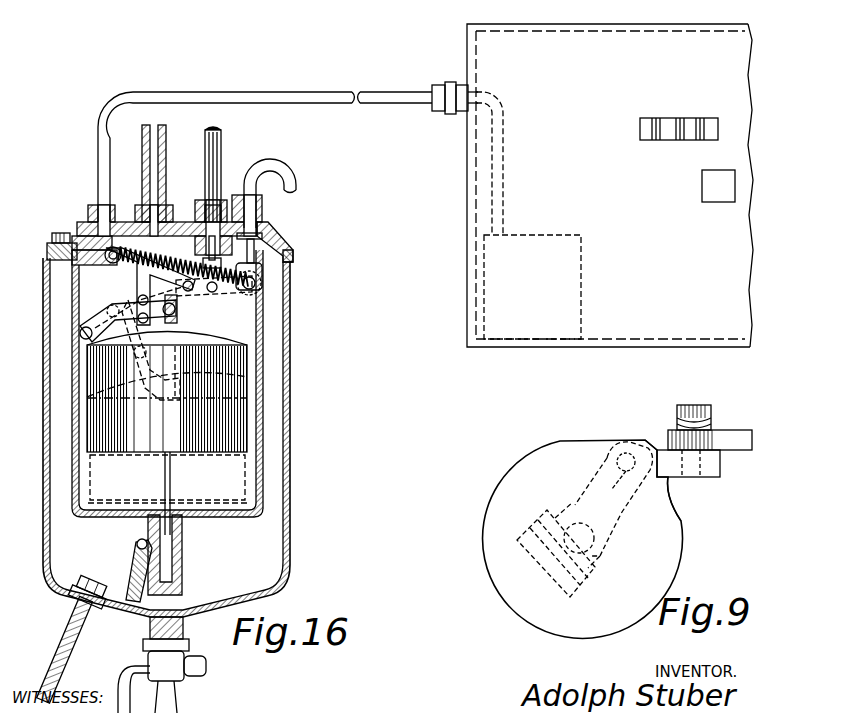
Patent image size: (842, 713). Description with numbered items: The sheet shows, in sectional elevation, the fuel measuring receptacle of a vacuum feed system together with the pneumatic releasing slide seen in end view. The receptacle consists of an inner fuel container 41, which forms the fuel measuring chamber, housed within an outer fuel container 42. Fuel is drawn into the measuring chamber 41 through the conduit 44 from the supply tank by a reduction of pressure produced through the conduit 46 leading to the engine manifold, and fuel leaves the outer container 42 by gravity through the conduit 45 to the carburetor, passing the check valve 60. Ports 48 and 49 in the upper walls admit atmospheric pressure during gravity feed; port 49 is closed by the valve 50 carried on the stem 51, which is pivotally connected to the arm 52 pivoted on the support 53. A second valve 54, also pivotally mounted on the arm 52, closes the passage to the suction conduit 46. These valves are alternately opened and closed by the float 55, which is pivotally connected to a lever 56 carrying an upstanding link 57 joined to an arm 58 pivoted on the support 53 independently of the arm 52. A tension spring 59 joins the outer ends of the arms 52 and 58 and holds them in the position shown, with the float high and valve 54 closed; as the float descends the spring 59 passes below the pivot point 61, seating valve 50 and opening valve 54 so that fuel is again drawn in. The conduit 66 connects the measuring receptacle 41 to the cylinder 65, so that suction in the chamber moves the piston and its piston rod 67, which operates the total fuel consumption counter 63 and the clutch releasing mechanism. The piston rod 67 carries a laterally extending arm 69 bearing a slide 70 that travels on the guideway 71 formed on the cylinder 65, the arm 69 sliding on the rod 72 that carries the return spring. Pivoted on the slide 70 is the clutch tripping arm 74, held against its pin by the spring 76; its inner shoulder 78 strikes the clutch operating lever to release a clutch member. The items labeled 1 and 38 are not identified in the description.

In FIG. 16, the casing 1 is at (610, 185).
In FIG. 16, the indicator window 38 is at (716, 202).
In FIG. 16, the inner fuel container 41 is at (226, 517).
In FIG. 16, the outer fuel container 42 is at (290, 374).
In FIG. 16, the conduit 44 is at (155, 172).
In FIG. 16, the conduit 45 is at (72, 638).
In FIG. 16, the conduit 46 is at (210, 155).
In FIG. 16, the port 48 is at (272, 248).
In FIG. 16, the port 49 is at (290, 254).
In FIG. 16, the valve 50 is at (250, 230).
In FIG. 16, the stem 51 is at (262, 274).
In FIG. 16, the arm 52 is at (228, 292).
In FIG. 16, the support 53 is at (135, 238).
In FIG. 16, the valve 54 is at (200, 240).
In FIG. 16, the float 55 is at (167, 434).
In FIG. 16, the lever 56 is at (170, 320).
In FIG. 16, the upstanding link 57 is at (172, 288).
In FIG. 16, the arm 58 is at (180, 262).
In FIG. 16, the tension spring 59 is at (180, 255).
In FIG. 16, the check valve 60 is at (128, 568).
In FIG. 16, the pivot point 61 is at (190, 291).
In FIG. 16, the total fuel consumption counter 63 is at (710, 140).
In FIG. 16, the cylinder 65 is at (497, 295).
In FIG. 9, the cylinder 65 is at (583, 539).
In FIG. 16, the conduit 66 is at (270, 96).
In FIG. 9, the piston rod 67 is at (595, 548).
In FIG. 9, the laterally extending arm 69 is at (585, 510).
In FIG. 9, the slide 70 is at (712, 466).
In FIG. 9, the guideway 71 is at (660, 446).
In FIG. 9, the rod 72 is at (614, 499).
In FIG. 9, the clutch tripping arm 74 is at (678, 484).
In FIG. 9, the spring 76 is at (712, 421).
In FIG. 9, the inner shoulder 78 is at (758, 438).